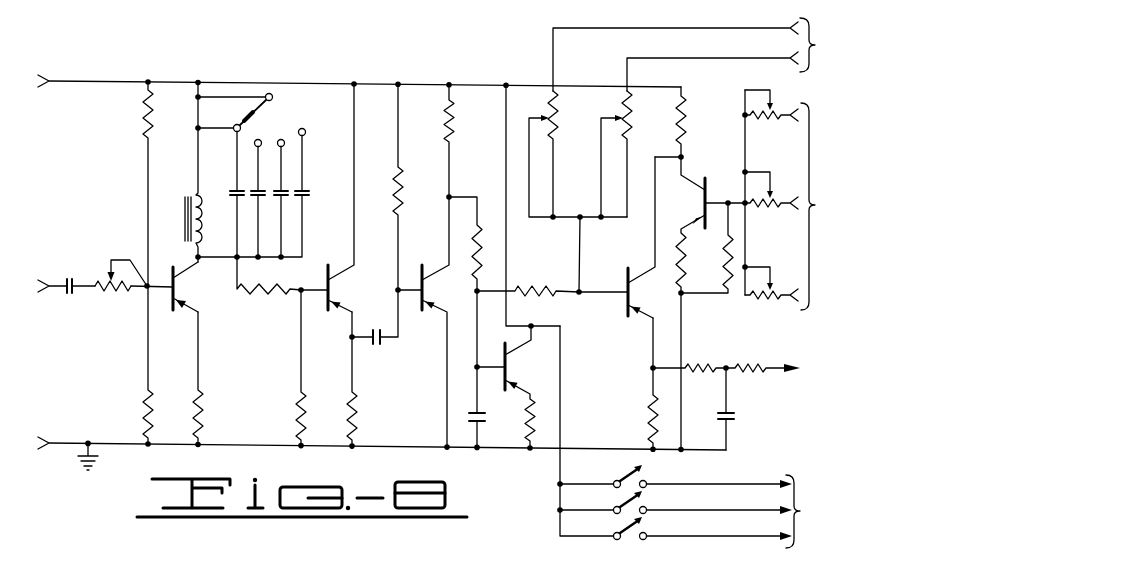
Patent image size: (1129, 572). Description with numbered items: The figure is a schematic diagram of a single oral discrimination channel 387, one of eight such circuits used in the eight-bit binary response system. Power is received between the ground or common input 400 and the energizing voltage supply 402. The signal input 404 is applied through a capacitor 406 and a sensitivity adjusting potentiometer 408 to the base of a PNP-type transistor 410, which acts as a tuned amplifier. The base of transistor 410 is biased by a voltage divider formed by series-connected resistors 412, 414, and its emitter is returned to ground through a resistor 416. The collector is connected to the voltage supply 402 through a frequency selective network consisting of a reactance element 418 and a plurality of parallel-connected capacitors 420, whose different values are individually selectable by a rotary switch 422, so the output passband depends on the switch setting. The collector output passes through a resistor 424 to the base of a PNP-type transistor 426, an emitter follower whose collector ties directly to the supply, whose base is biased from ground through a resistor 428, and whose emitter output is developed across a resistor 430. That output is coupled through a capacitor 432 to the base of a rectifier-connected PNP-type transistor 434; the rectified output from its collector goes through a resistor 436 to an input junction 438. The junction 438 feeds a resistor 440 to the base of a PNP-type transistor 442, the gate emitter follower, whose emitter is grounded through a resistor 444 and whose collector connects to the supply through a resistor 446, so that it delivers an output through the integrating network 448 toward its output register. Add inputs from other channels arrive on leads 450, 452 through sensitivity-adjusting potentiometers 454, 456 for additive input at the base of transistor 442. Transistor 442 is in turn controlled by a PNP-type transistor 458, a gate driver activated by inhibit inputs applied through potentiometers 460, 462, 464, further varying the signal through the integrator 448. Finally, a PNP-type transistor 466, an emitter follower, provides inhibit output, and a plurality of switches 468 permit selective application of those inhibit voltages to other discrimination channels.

The oral discrimination channel 387 is at (226, 52).
The ground or common input 400 is at (59, 444).
The energizing voltage supply 402 is at (60, 83).
The signal input 404 is at (52, 283).
The capacitor 406 is at (82, 293).
The sensitivity adjusting potentiometer 408 is at (126, 292).
The PNP-type transistor 410 is at (187, 295).
The resistor 412 is at (156, 411).
The resistor 414 is at (140, 120).
The resistor 416 is at (204, 411).
The reactance element 418 is at (182, 209).
The parallel-connected capacitors 420 is at (286, 191).
The rotary switch 422 is at (259, 114).
The resistor 424 is at (273, 303).
The PNP-type transistor 426 is at (334, 294).
The resistor 428 is at (309, 407).
The resistor 430 is at (358, 411).
The capacitor 432 is at (382, 340).
The PNP-type transistor 434 is at (427, 293).
The resistor 436 is at (485, 251).
The input junction 438 is at (479, 293).
The resistor 440 is at (521, 285).
The PNP-type transistor 442 is at (633, 301).
The resistor 444 is at (648, 411).
The resistor 446 is at (685, 122).
The integrating network 448 is at (752, 403).
The lead 450 is at (651, 28).
The lead 452 is at (698, 58).
The sensitivity-adjusting potentiometer 454 is at (559, 118).
The sensitivity-adjusting potentiometer 456 is at (636, 130).
The PNP-type transistor 458 is at (700, 201).
The potentiometer 460 is at (755, 127).
The potentiometer 462 is at (758, 215).
The potentiometer 464 is at (770, 304).
The PNP-type transistor 466 is at (510, 372).
The switches 468 is at (629, 545).